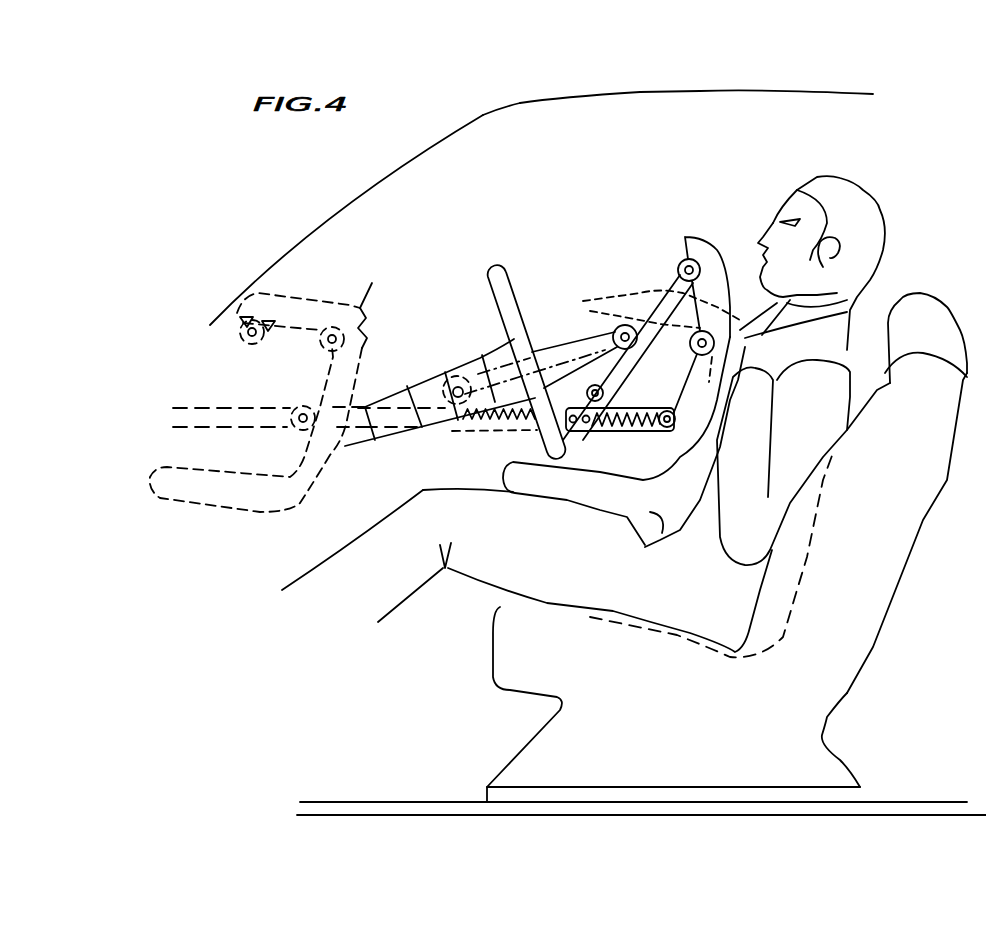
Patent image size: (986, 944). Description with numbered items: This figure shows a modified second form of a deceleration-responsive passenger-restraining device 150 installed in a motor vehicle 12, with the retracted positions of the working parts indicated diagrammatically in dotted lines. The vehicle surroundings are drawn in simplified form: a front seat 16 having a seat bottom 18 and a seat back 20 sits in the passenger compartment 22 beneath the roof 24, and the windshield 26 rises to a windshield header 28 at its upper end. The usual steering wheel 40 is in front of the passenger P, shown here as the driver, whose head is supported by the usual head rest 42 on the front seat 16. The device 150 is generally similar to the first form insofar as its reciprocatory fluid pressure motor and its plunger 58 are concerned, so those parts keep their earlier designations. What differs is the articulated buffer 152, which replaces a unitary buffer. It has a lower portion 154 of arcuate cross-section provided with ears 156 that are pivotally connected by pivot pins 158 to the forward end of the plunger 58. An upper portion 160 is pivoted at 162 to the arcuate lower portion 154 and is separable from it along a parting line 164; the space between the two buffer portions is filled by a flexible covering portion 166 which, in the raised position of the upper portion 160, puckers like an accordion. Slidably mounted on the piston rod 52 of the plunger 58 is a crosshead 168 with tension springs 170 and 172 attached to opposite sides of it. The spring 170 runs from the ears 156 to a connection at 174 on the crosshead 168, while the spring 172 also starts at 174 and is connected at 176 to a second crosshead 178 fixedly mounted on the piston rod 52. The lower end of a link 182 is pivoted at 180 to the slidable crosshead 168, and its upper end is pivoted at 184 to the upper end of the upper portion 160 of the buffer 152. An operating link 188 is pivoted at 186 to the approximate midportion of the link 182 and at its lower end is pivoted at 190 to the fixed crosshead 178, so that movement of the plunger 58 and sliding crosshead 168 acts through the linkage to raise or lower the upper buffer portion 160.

The motor vehicle 12 is at (535, 188).
The front seat 16 is at (832, 720).
The seat bottom 18 is at (675, 619).
The seat back 20 is at (897, 557).
The passenger compartment 22 is at (787, 100).
The roof 24 is at (607, 95).
The windshield 26 is at (370, 187).
The windshield header 28 is at (483, 115).
The steering wheel 40 is at (506, 283).
The head rest 42 is at (923, 317).
The piston rod 52 is at (325, 472).
The plunger 58 is at (208, 404).
The modified deceleration-responsive passenger-restraining device 150 is at (693, 233).
The articulated buffer 152 is at (793, 342).
The lower portion 154 is at (646, 535).
The ears 156 is at (672, 405).
The pivot pins 158 is at (662, 436).
The upper portion 160 is at (720, 252).
The pivot 162 is at (690, 345).
The parting line 164 is at (690, 410).
The flexible covering portion 166 is at (740, 334).
The crosshead 168 is at (588, 390).
The tension spring 170 is at (619, 408).
The tension spring 172 is at (488, 429).
The connection point on crosshead 174 is at (587, 433).
The connection point on fixed crosshead 176 is at (442, 420).
The crosshead 178 is at (422, 430).
The pivot 180 is at (607, 360).
The link 182 is at (648, 303).
The pivot 184 is at (678, 270).
The pivot 186 is at (612, 336).
The operating link 188 is at (543, 352).
The pivot 190 is at (455, 378).
The passenger P is at (868, 220).